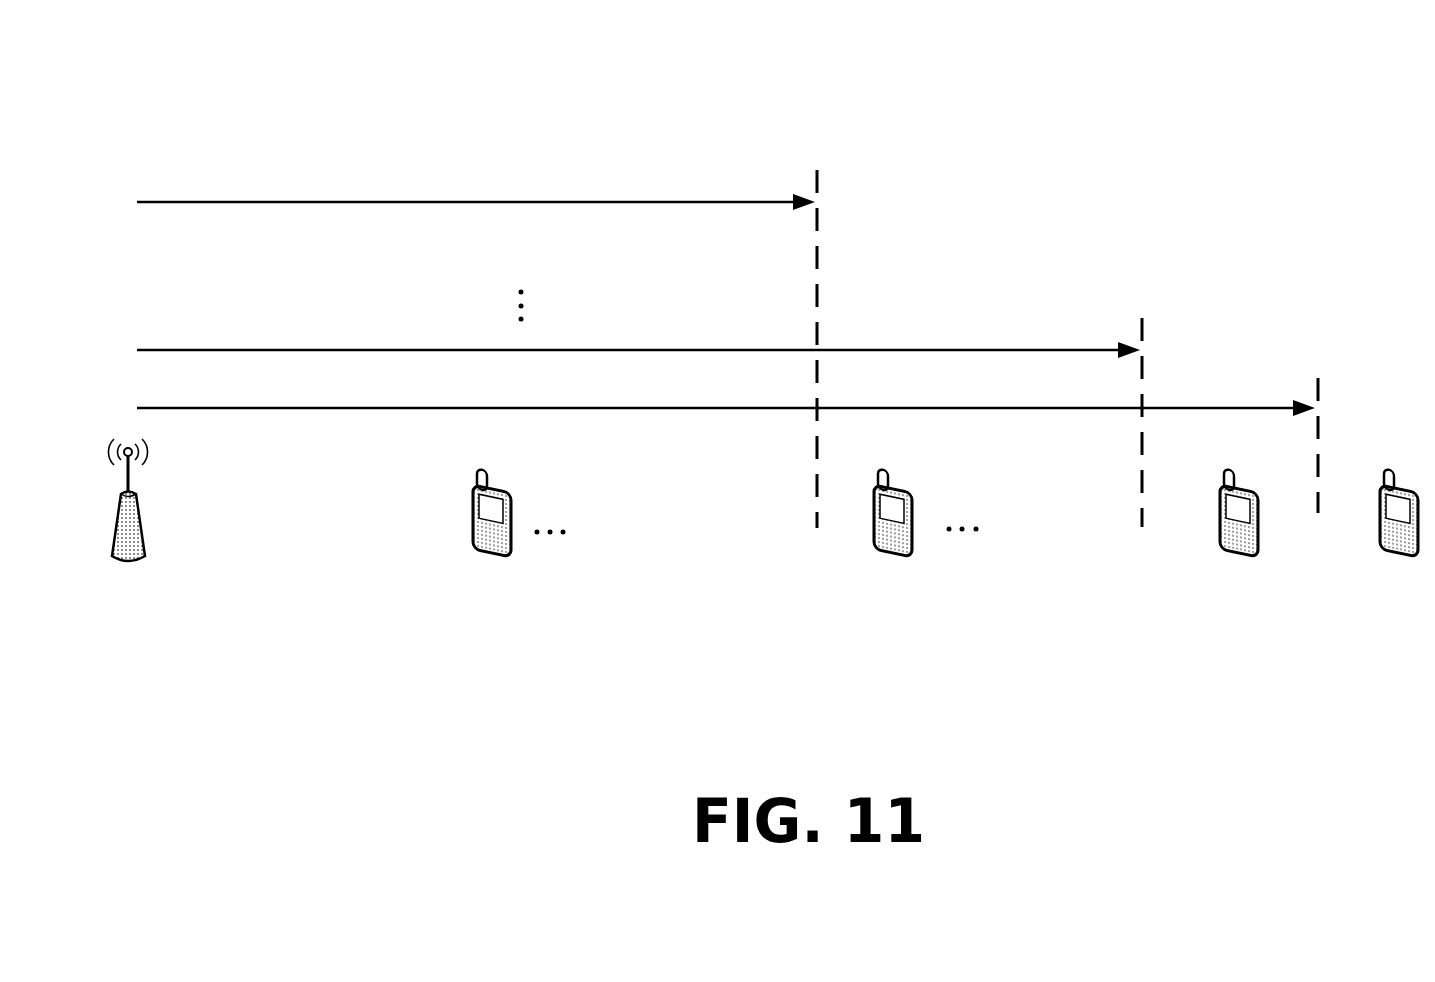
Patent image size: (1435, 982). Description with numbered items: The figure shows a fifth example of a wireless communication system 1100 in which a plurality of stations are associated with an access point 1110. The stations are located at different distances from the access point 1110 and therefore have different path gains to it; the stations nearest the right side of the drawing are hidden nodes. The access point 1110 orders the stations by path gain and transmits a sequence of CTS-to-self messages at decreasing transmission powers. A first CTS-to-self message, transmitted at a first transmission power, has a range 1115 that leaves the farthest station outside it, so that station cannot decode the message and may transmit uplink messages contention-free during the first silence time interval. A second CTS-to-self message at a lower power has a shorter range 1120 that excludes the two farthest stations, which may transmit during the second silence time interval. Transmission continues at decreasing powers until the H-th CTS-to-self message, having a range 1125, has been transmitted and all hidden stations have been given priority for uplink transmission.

The wireless communication system 1100 is at (1182, 106).
The access point 1110 is at (123, 562).
The range 1115 is at (228, 406).
The range 1120 is at (228, 348).
The range 1125 is at (225, 200).